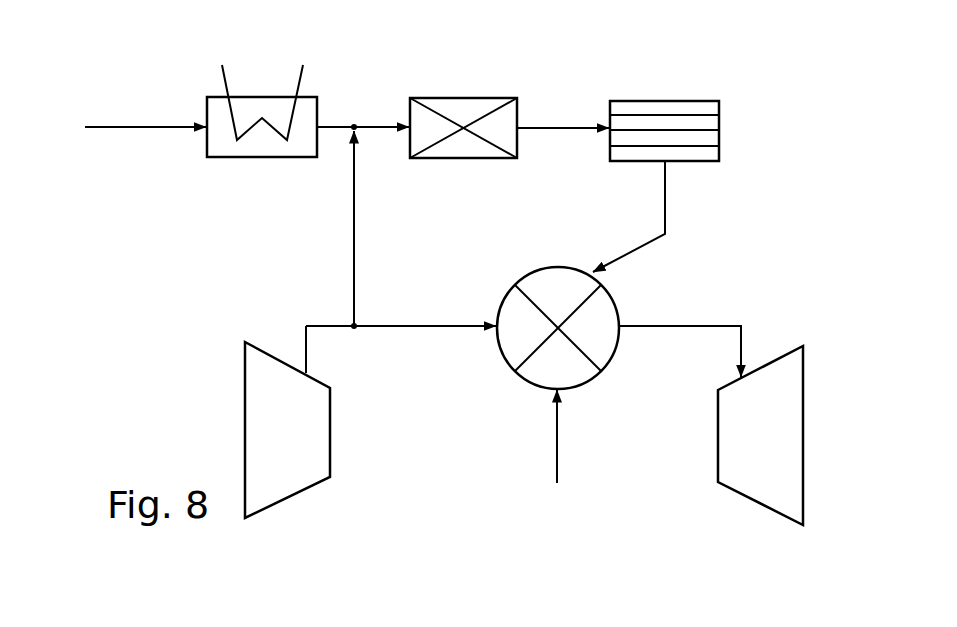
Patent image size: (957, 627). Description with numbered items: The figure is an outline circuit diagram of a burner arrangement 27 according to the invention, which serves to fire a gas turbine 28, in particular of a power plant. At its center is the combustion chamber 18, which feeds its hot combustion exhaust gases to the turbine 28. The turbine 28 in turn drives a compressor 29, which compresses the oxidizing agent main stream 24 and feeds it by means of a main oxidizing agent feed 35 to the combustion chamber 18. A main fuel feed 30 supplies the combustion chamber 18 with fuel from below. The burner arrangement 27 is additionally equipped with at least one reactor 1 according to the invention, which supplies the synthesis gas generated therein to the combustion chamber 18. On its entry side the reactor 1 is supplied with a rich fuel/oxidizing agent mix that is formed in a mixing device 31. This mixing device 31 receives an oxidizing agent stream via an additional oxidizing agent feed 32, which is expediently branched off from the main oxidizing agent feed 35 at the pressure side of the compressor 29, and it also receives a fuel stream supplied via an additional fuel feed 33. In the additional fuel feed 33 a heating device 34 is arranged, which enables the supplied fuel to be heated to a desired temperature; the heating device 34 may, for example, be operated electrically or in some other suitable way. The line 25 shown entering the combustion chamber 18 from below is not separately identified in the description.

The reactor 1 is at (722, 125).
The combustion chamber 18 is at (607, 315).
The oxidizing agent main stream 24 is at (435, 328).
The fuel supply line 25 is at (556, 433).
The burner arrangement 27 is at (218, 299).
The gas turbine 28 is at (757, 483).
The compressor 29 is at (282, 485).
The main fuel feed 30 is at (560, 452).
The mixing device 31 is at (467, 110).
The additional oxidizing agent feed 32 is at (356, 227).
The additional fuel feed 33 is at (342, 125).
The heating device 34 is at (257, 148).
The main oxidizing agent feed 35 is at (385, 330).